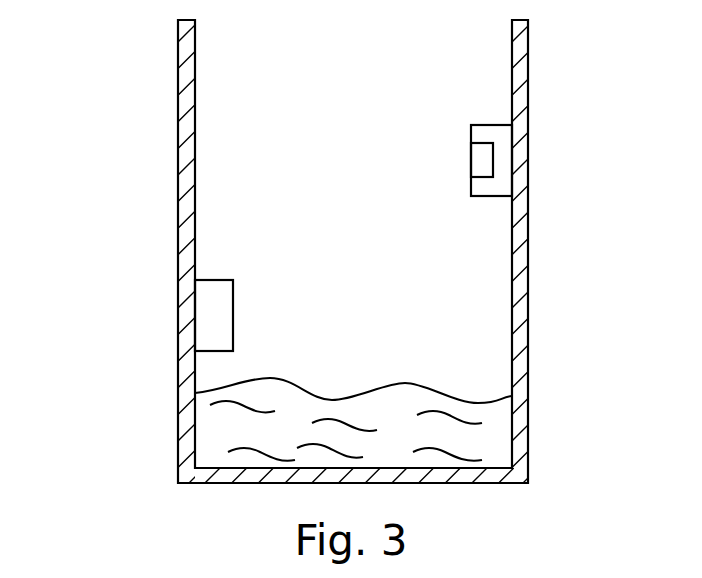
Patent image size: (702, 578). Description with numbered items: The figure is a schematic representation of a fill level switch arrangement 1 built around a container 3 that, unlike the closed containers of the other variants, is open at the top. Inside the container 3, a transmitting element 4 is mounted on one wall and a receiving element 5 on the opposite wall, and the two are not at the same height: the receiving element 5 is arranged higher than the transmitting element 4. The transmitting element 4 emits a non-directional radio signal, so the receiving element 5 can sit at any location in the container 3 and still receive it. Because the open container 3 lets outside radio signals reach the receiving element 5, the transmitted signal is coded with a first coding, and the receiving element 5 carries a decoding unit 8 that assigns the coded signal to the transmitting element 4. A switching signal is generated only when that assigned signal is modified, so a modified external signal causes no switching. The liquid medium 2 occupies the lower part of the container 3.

The fill level switch arrangement 1 is at (100, 103).
The liquid medium 2 is at (497, 451).
The container 3 is at (521, 76).
The transmitting element 4 is at (203, 317).
The receiving element 5 is at (500, 146).
The decoding unit 8 is at (480, 167).